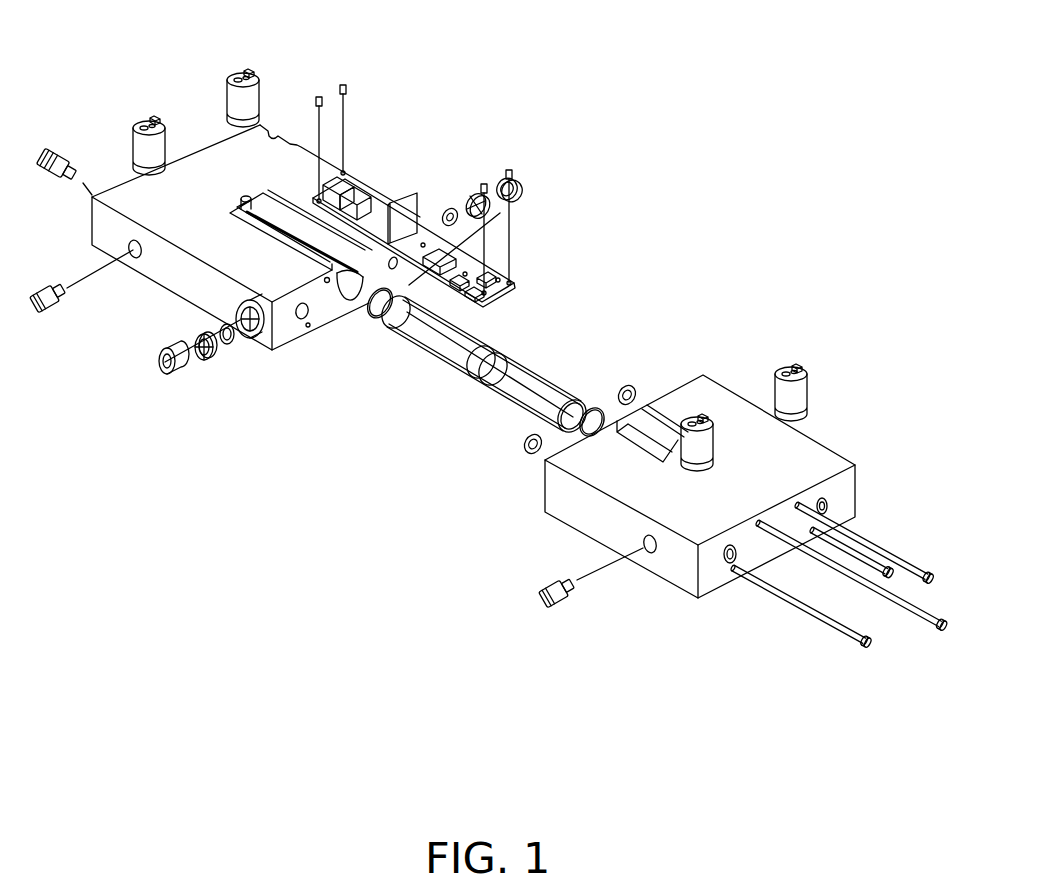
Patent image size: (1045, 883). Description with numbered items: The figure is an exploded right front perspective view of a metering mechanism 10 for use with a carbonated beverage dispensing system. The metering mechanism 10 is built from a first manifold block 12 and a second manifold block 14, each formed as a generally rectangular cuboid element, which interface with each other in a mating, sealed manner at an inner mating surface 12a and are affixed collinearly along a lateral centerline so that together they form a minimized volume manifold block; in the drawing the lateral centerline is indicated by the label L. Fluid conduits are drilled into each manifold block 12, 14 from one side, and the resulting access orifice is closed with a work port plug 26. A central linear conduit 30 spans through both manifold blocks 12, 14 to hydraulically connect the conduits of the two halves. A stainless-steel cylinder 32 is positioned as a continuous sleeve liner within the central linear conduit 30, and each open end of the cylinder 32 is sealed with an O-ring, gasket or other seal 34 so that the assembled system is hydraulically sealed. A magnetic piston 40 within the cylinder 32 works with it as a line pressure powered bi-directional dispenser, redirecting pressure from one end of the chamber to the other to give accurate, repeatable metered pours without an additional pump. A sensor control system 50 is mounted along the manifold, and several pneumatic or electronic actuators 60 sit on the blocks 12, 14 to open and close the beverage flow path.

The metering mechanism 10 is at (289, 586).
The first manifold block 12 is at (163, 282).
The inner mating surface 12a is at (287, 356).
The second manifold block 14 is at (718, 386).
The work port plug 26 is at (39, 283).
The central linear conduit 30 is at (346, 312).
The stainless-steel cylinder 32 is at (468, 332).
The seal 34 is at (377, 317).
The magnetic piston 40 is at (478, 378).
The sensor control system 50 is at (404, 104).
The actuator 60 is at (165, 120).
The tie rod L is at (133, 163).